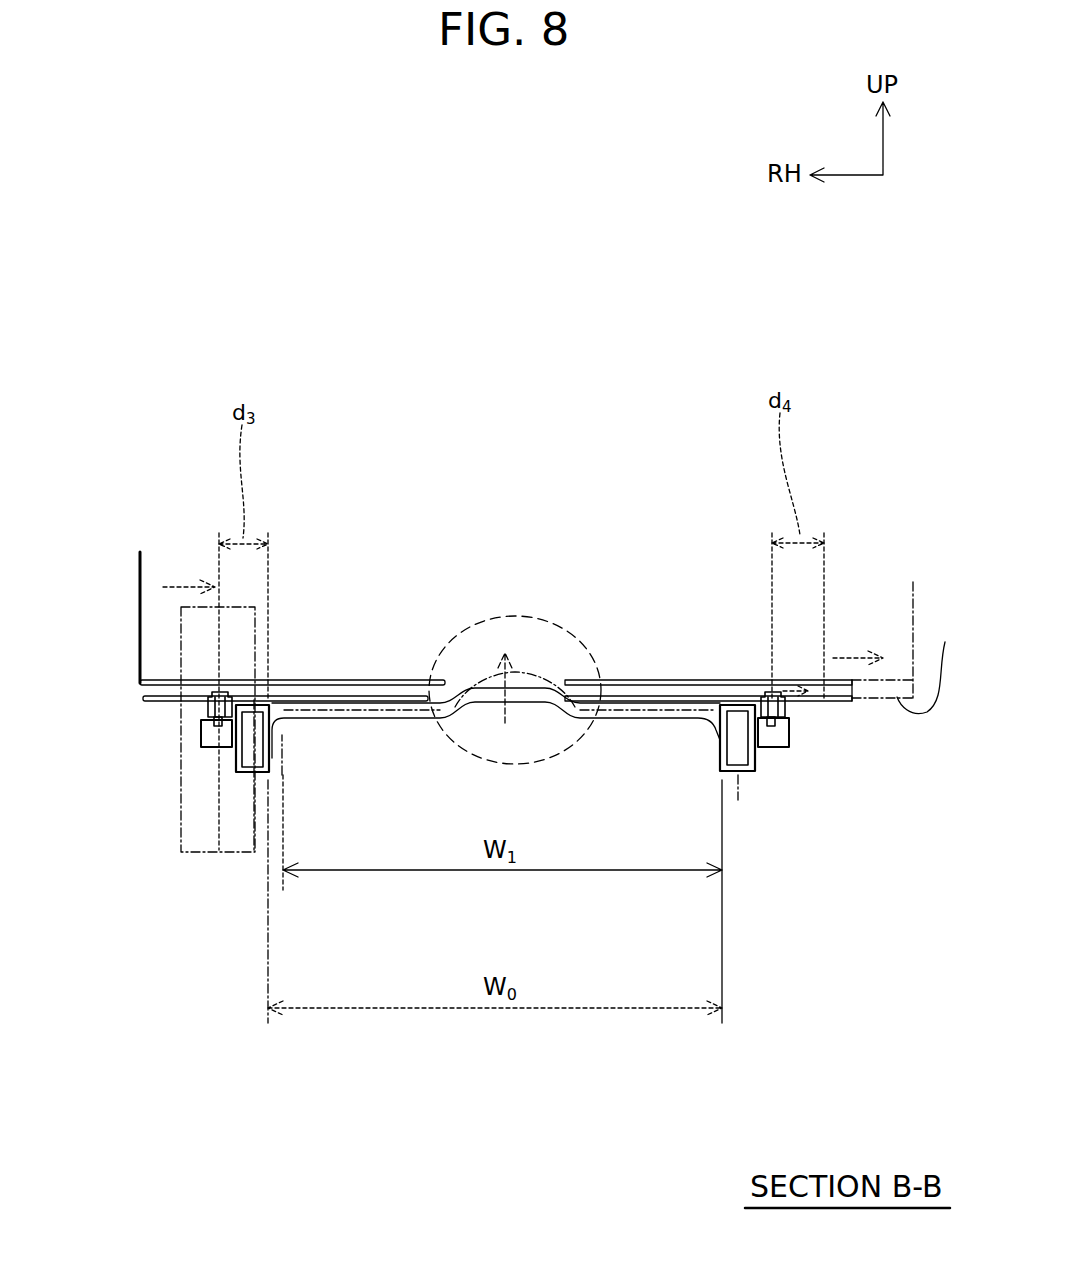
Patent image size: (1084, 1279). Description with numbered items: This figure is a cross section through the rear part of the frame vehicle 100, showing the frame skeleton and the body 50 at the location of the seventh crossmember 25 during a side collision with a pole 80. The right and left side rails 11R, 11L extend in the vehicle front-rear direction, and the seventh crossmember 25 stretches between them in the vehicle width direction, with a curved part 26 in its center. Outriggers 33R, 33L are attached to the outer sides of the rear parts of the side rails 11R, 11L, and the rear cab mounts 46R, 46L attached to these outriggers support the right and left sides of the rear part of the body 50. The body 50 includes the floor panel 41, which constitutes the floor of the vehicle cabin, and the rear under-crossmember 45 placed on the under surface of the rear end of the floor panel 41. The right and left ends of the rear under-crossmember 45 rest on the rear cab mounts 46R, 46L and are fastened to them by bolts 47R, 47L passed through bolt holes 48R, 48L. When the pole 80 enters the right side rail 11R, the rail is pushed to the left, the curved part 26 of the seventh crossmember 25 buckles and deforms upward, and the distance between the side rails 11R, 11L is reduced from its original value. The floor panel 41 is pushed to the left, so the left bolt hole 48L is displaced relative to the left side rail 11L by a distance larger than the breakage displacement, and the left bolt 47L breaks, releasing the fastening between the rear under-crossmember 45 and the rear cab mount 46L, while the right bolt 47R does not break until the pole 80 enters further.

The frame vehicle 100 is at (221, 267).
The body 50 is at (128, 560).
The floor panel 41 is at (165, 680).
The rear under-crossmember 45 is at (195, 697).
The seventh crossmember 25 is at (518, 703).
The curved part 26 is at (503, 760).
The right outrigger 33R is at (217, 747).
The left outrigger 33L is at (737, 770).
The right side rail 11R is at (243, 773).
The left side rail 11L is at (772, 748).
The right bolt hole 48R is at (205, 698).
The left bolt hole 48L is at (748, 683).
The right bolt 47R is at (207, 710).
The left bolt 47L is at (800, 720).
The right rear cab mount 46R is at (203, 720).
The left rear cab mount 46L is at (790, 715).
The pole 80 is at (203, 852).